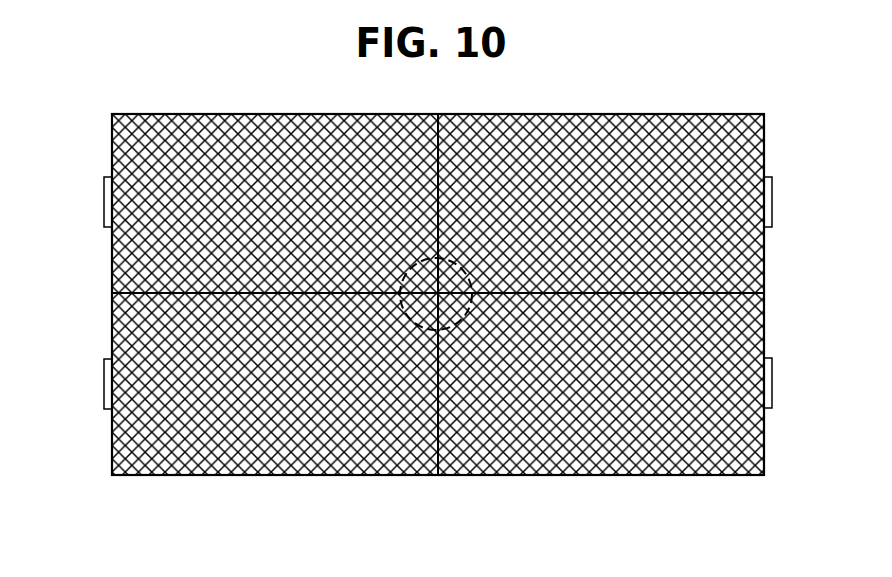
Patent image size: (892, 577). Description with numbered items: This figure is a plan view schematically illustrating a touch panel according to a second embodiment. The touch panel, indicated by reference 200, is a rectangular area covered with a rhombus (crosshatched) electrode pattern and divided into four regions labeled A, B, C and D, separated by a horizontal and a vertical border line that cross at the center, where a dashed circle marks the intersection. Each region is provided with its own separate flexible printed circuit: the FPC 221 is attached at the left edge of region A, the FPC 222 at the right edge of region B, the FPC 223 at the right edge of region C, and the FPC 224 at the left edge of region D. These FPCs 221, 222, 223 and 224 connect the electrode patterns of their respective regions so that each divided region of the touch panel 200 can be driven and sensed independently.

The display panel 200 is at (653, 476).
The FPC 221 is at (106, 205).
The FPC 222 is at (772, 203).
The FPC 223 is at (772, 378).
The FPC 224 is at (106, 379).